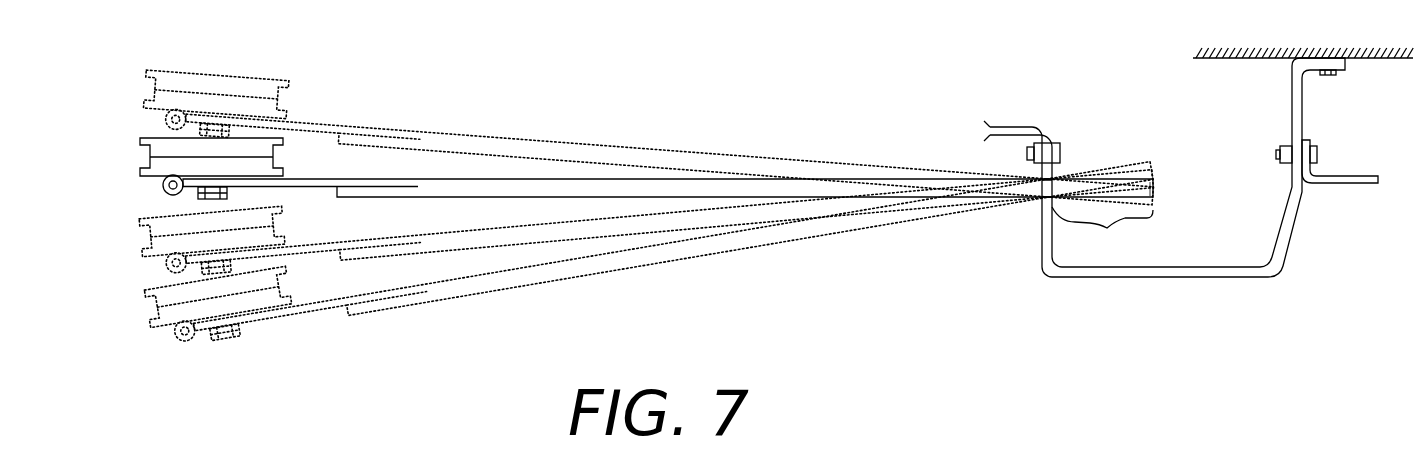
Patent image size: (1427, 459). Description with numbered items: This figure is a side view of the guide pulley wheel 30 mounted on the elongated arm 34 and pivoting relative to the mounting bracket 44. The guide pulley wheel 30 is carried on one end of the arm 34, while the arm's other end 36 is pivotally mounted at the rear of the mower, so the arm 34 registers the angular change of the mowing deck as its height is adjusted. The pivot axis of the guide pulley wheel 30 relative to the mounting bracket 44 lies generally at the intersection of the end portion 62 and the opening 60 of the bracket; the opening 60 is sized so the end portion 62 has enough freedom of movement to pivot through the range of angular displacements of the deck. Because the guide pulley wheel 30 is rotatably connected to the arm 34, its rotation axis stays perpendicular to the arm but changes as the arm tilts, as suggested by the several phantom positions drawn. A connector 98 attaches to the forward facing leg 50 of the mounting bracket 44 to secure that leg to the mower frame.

The guide pulley wheel 30 is at (132, 158).
The elongated arm 34 is at (607, 152).
The end 36 is at (1156, 181).
The mounting bracket 44 is at (1208, 330).
The forward facing leg 50 is at (1042, 255).
The opening 60 is at (1048, 187).
The end portion 62 is at (1106, 226).
The connector 98 is at (1018, 124).